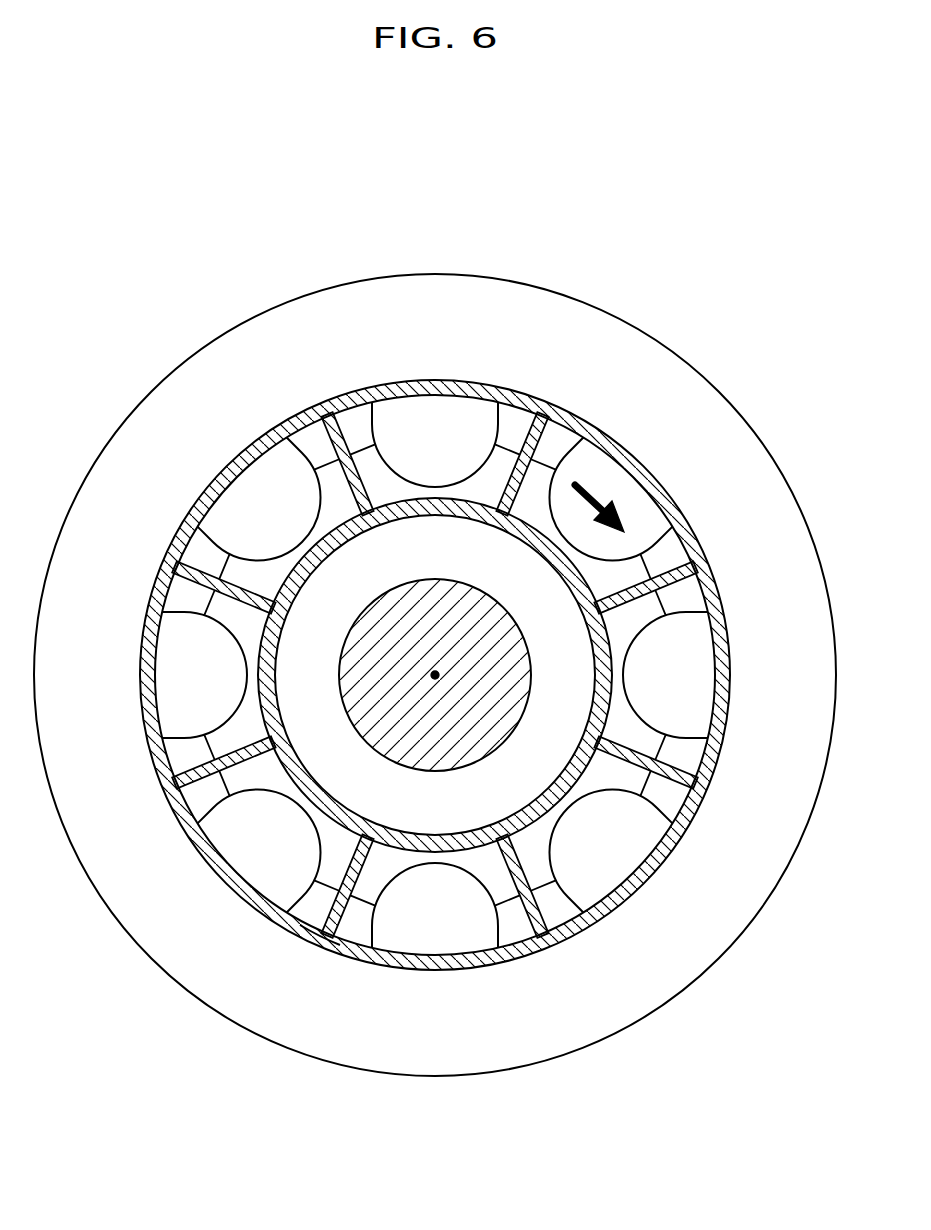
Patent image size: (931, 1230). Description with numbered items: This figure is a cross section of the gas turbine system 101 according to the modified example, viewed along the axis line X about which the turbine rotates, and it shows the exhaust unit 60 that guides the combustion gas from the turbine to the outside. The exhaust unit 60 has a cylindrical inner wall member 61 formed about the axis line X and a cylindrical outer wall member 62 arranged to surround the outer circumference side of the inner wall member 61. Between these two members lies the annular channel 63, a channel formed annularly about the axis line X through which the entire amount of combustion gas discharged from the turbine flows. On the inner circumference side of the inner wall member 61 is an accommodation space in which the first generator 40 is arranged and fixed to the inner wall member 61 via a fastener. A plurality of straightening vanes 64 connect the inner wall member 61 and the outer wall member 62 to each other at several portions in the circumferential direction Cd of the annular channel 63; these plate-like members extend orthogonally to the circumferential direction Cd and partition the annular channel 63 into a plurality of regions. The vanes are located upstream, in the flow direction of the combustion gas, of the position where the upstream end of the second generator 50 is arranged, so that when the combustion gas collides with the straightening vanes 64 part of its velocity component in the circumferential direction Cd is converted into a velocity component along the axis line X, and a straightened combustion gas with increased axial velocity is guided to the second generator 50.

The gas turbine system 101 is at (201, 186).
The exhaust unit 60 is at (146, 389).
The outer wall member 62 is at (523, 960).
The inner wall member 61 is at (411, 508).
The straightening vanes 64 is at (354, 504).
The annular channel 63 is at (316, 920).
The second generator 50 is at (439, 405).
The first generator 40 is at (476, 746).
The axis line X is at (435, 678).
The circumferential direction Cd is at (596, 496).